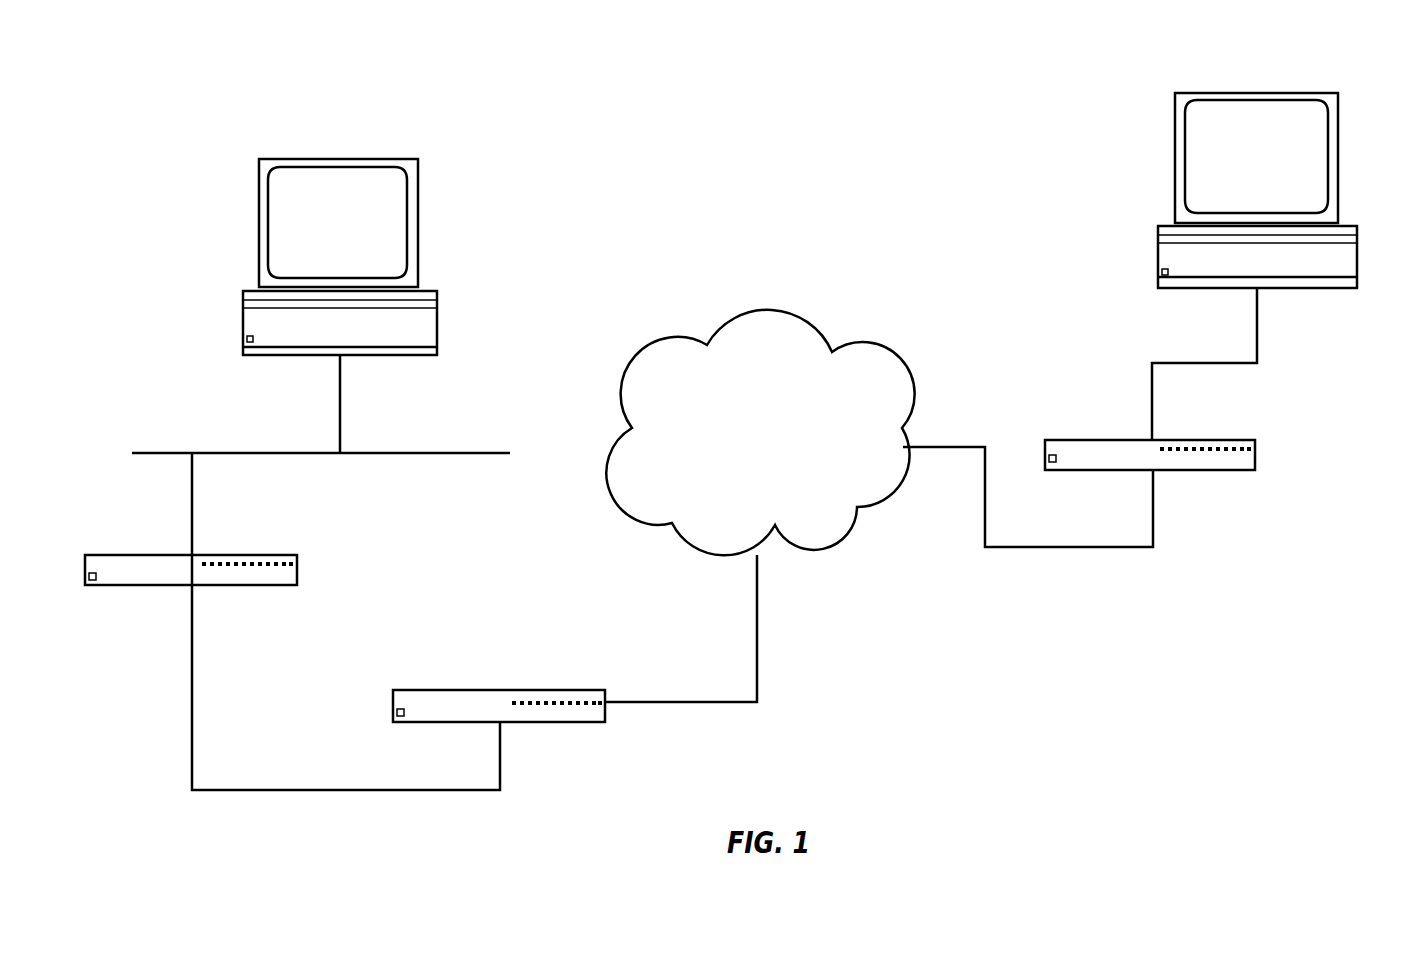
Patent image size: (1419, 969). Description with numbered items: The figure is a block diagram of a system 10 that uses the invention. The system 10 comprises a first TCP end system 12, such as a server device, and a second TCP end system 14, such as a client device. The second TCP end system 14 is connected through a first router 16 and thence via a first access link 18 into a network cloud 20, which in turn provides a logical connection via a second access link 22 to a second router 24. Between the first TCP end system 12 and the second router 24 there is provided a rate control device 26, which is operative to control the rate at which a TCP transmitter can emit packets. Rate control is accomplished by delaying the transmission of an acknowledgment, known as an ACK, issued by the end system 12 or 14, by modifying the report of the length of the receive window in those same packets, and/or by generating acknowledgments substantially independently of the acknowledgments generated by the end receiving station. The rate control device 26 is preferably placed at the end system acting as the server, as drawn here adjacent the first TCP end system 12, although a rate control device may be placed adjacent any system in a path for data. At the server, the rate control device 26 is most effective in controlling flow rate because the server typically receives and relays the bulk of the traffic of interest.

The system 10 is at (122, 133).
The first TCP end system 12 is at (259, 253).
The second TCP end system 14 is at (1175, 158).
The first router 16 is at (1090, 440).
The first access link 18 is at (950, 522).
The network cloud 20 is at (766, 310).
The second access link 22 is at (700, 620).
The second router 24 is at (426, 692).
The rate control device 26 is at (115, 555).